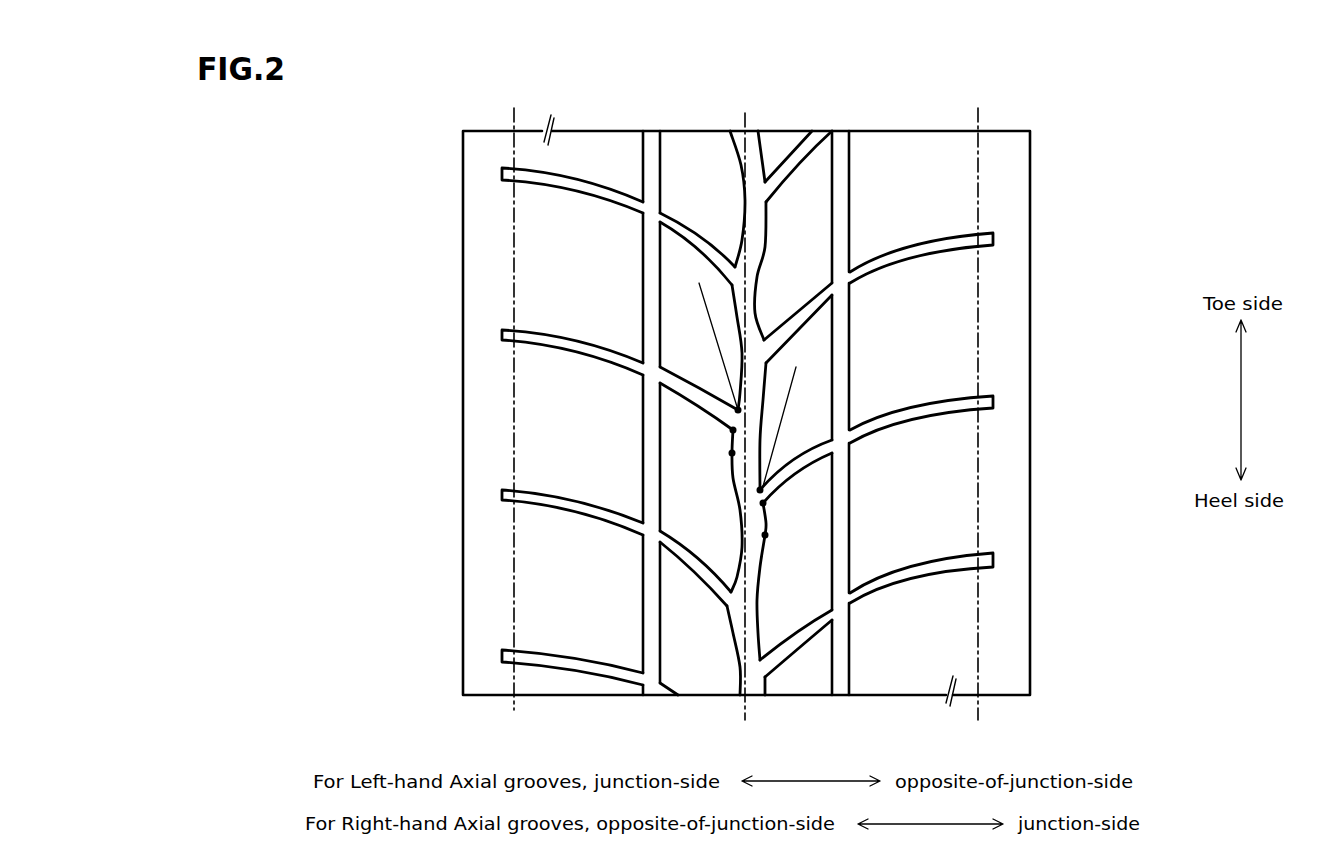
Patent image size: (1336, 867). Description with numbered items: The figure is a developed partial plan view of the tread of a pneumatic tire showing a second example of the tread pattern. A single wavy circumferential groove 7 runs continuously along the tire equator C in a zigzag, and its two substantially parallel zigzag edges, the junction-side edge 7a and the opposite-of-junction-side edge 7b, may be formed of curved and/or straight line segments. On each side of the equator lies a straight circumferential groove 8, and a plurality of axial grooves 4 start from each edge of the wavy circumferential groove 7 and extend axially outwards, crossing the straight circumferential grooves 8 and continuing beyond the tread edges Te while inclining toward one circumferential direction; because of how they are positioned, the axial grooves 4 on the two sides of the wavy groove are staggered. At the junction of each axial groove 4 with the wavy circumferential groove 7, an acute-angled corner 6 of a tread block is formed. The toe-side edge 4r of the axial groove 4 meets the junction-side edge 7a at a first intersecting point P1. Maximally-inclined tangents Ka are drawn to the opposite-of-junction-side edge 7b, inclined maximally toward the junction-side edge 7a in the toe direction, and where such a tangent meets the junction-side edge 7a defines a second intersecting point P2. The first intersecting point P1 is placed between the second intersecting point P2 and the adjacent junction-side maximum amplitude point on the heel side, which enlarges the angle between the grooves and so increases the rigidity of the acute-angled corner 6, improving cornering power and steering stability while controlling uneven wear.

The axial groove 4 is at (547, 190).
The toe-side edge of the axial groove 4r is at (557, 333).
The acute-angled corner 6 is at (727, 570).
The wavy circumferential groove 7 is at (753, 404).
The junction-side edge 7a is at (740, 657).
The opposite-of-junction-side edge 7b is at (770, 638).
The straight circumferential groove 8 is at (651, 143).
The tread edge Te is at (513, 121).
The tire equator C is at (745, 404).
The maximally-inclined tangent Ka is at (700, 300).
The first intersecting point P1 is at (733, 428).
The second intersecting point P2 is at (736, 410).